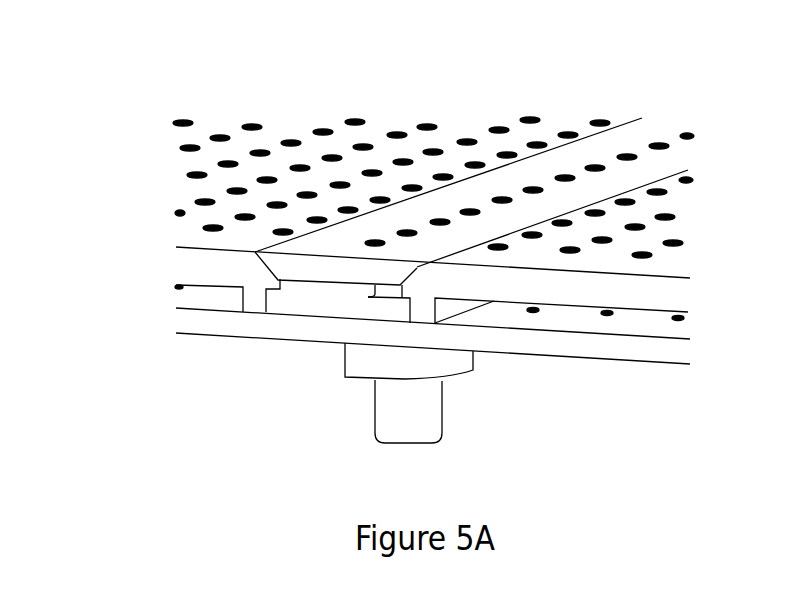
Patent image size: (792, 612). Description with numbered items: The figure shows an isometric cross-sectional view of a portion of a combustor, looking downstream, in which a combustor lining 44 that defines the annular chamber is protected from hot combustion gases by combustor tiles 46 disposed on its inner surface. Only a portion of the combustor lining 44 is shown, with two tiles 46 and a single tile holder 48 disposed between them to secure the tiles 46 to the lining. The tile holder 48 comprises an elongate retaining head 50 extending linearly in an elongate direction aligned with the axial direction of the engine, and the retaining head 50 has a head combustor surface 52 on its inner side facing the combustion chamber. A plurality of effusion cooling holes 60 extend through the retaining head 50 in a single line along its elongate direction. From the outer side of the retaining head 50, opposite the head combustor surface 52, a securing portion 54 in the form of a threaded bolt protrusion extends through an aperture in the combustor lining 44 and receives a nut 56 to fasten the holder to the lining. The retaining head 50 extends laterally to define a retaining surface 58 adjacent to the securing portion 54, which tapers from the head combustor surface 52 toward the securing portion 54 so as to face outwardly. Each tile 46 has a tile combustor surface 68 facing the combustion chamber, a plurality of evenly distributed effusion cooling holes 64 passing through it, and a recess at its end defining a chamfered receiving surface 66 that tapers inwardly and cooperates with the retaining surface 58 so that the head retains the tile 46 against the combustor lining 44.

The combustor lining 44 is at (252, 330).
The combustor tiles 46 is at (195, 262).
The tile holder 48 is at (388, 246).
The retaining head 50 is at (623, 147).
The head combustor surface 52 is at (317, 268).
The securing portion 54 is at (458, 415).
The nut 56 is at (450, 367).
The retaining surface 58 is at (424, 272).
The effusion cooling holes 60 is at (660, 146).
The effusion cooling holes 64 is at (290, 137).
The receiving surface 66 is at (358, 285).
The tile combustor surface 68 is at (406, 142).